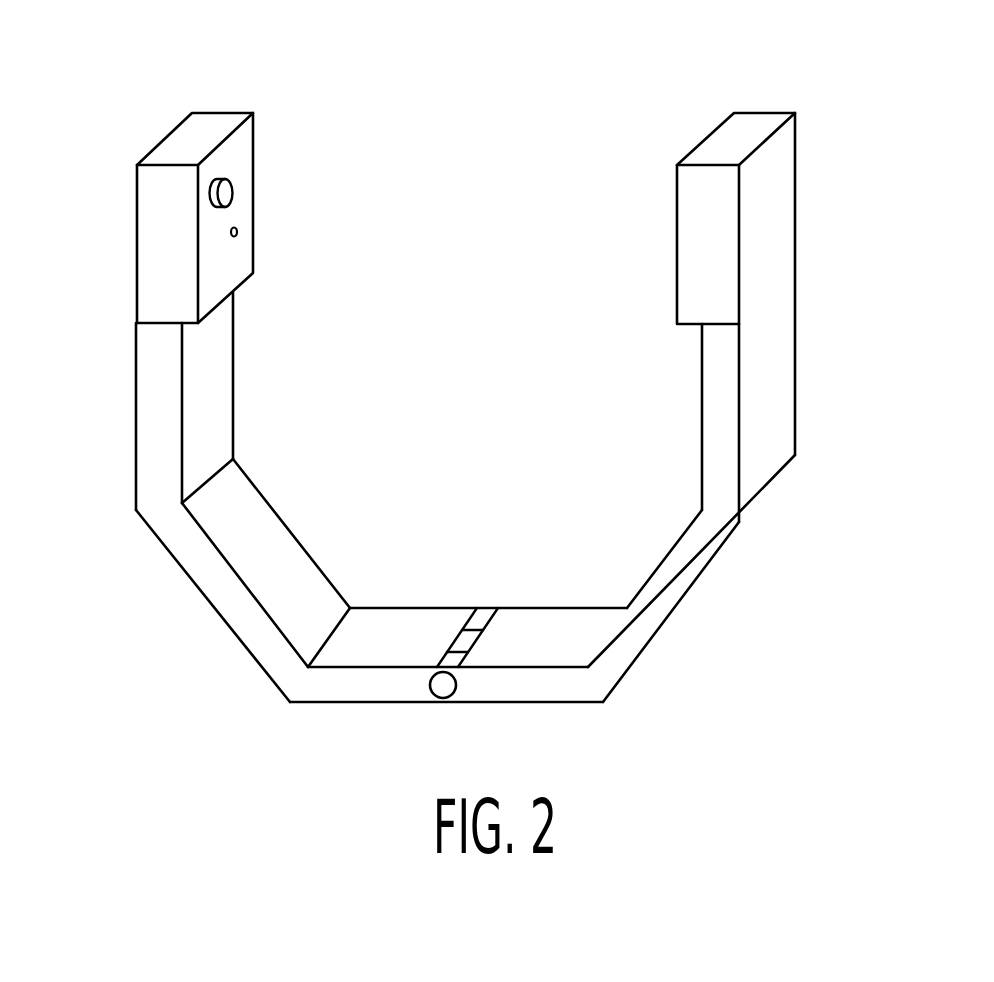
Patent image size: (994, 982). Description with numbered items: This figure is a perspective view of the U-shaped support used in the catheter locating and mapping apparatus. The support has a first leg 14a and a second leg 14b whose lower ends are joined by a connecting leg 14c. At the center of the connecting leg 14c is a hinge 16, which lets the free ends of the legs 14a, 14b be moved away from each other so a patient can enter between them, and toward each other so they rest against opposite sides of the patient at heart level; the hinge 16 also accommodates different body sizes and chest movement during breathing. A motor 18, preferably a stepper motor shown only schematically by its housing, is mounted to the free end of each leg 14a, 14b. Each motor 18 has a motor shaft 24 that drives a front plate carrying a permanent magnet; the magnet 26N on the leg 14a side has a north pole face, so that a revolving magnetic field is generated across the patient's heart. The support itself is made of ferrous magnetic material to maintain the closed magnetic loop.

The motor 18 is at (135, 202).
The permanent magnet 26N is at (232, 191).
The motor shaft 24 is at (238, 233).
The first leg 14a is at (136, 450).
The second leg 14b is at (777, 405).
The connecting leg 14c is at (355, 650).
The hinge 16 is at (463, 640).